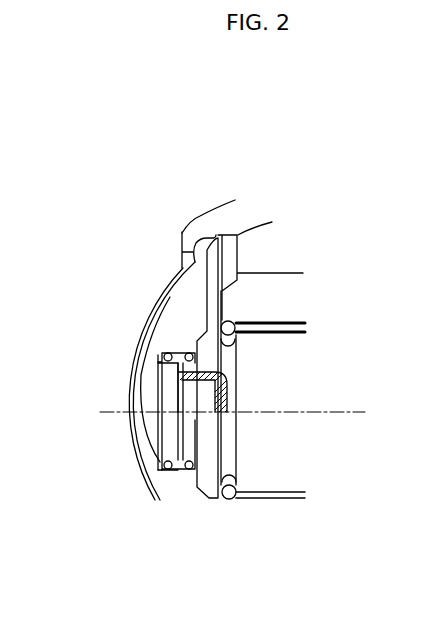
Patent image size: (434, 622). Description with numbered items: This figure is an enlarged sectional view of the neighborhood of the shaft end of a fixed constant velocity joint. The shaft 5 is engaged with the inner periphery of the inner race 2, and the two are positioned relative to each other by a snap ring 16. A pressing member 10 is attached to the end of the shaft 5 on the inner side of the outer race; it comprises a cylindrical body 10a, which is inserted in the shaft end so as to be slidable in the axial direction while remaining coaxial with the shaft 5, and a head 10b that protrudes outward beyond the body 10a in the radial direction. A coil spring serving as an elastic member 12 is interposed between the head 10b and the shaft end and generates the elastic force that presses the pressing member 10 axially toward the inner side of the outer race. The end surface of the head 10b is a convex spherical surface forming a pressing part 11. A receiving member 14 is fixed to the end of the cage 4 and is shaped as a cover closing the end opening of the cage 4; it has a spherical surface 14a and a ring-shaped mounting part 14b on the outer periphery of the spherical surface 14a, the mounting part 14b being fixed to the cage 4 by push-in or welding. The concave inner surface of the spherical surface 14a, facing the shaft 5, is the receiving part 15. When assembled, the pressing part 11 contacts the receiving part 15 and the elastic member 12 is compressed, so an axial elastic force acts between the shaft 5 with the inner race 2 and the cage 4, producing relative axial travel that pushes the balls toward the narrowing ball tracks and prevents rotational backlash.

The inner race 2 is at (287, 271).
The cage 4 is at (247, 210).
The shaft 5 is at (272, 480).
The pressing member 10 is at (170, 440).
The body 10a is at (205, 393).
The head 10b is at (150, 440).
The pressing part 11 is at (137, 433).
The elastic member 12 is at (168, 297).
The receiving member 14 is at (140, 330).
The spherical surface 14a is at (157, 360).
The mounting part 14b is at (210, 240).
The receiving part 15 is at (148, 393).
The snap ring 16 is at (236, 318).